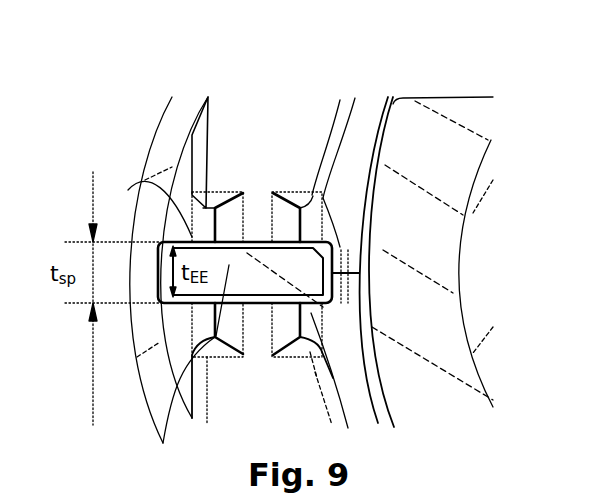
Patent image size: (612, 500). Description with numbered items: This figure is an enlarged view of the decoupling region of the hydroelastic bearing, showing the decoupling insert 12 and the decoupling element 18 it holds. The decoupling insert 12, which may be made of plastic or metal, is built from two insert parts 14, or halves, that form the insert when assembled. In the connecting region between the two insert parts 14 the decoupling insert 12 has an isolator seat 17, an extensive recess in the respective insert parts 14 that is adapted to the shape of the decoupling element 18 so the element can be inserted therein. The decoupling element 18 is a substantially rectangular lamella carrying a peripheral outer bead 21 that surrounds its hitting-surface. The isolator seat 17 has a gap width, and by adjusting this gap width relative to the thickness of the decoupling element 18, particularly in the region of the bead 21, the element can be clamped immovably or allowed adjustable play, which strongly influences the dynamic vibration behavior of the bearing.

The decoupling insert 12 is at (312, 78).
The insert parts 14 is at (203, 208).
The isolator seat 17 is at (145, 180).
The decoupling element 18 is at (253, 291).
The bead 21 is at (320, 353).